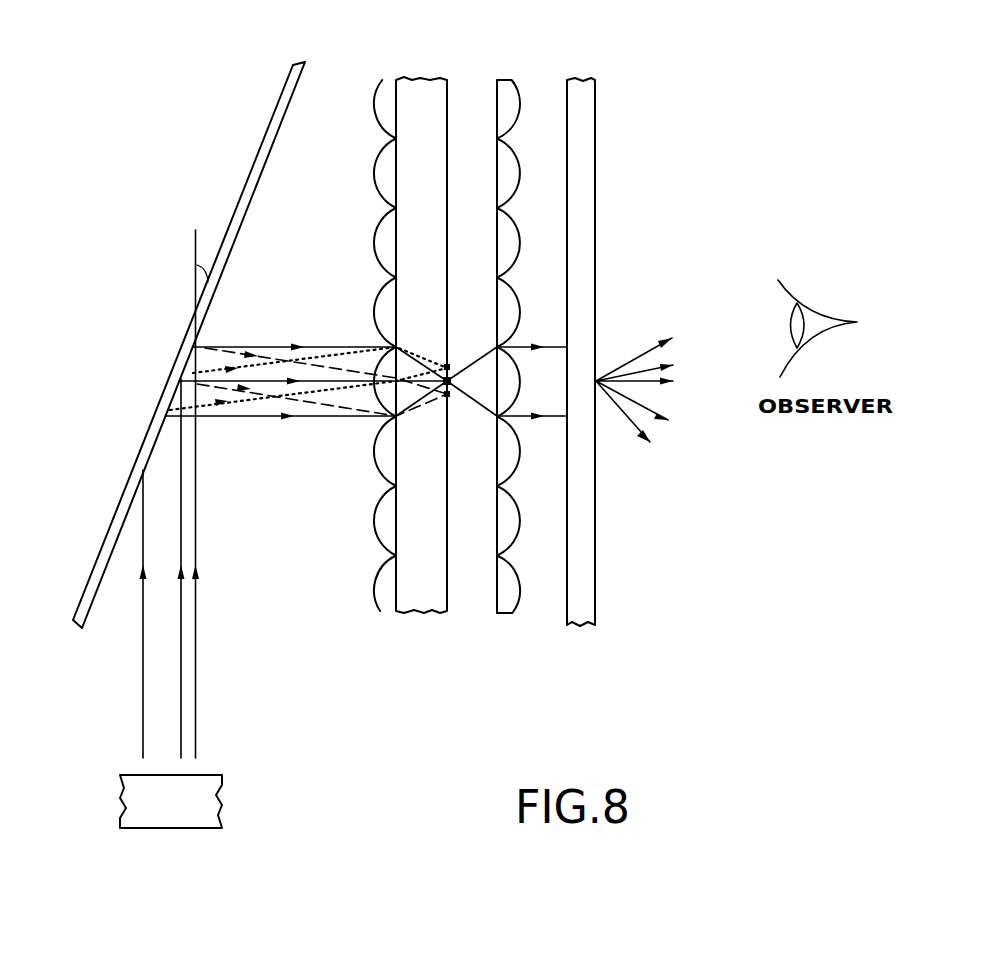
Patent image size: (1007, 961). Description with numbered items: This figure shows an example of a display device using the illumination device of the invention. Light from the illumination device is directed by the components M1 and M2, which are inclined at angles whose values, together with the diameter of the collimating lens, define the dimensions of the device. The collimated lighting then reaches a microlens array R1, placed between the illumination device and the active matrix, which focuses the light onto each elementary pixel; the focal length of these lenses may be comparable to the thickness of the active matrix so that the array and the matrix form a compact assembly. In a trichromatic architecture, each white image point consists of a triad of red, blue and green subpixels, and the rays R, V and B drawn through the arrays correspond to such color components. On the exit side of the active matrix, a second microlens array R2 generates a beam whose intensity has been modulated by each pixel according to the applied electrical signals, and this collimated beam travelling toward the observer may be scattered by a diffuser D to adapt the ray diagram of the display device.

The inclined component M2 is at (257, 172).
The inclined component M1 is at (200, 808).
The green light ray bundle V is at (316, 345).
The red light ray bundle R is at (258, 345).
The blue light ray bundle B is at (248, 405).
The microlens array R1 is at (388, 83).
The second microlens array R2 is at (513, 92).
The diffuser D is at (592, 97).